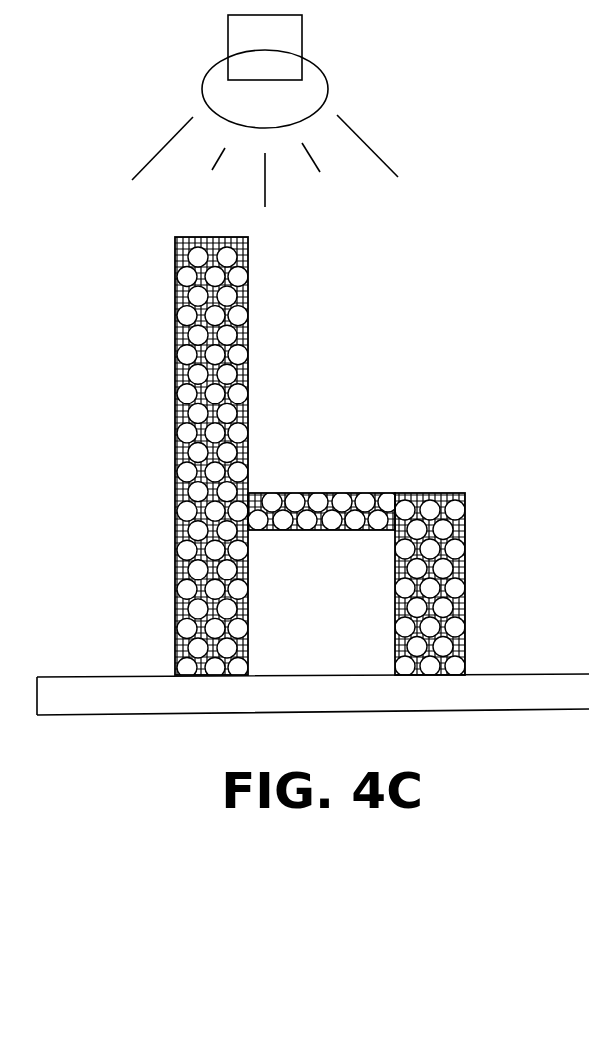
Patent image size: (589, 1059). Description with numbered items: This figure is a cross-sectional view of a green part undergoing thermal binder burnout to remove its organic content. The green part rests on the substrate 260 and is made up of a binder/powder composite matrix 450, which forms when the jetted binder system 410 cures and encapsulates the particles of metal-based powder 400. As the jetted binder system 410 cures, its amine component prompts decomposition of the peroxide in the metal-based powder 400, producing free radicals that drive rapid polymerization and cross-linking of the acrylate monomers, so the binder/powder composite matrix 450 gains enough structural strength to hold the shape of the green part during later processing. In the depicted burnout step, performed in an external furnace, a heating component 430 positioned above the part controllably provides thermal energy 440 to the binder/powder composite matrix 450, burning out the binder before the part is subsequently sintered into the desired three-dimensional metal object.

The substrate 260 is at (500, 698).
The metal-based powder 400 is at (237, 315).
The jetted binder system 410 is at (243, 408).
The heating component 430 is at (213, 82).
The thermal energy 440 is at (370, 147).
The binder/powder composite matrix 450 is at (333, 447).